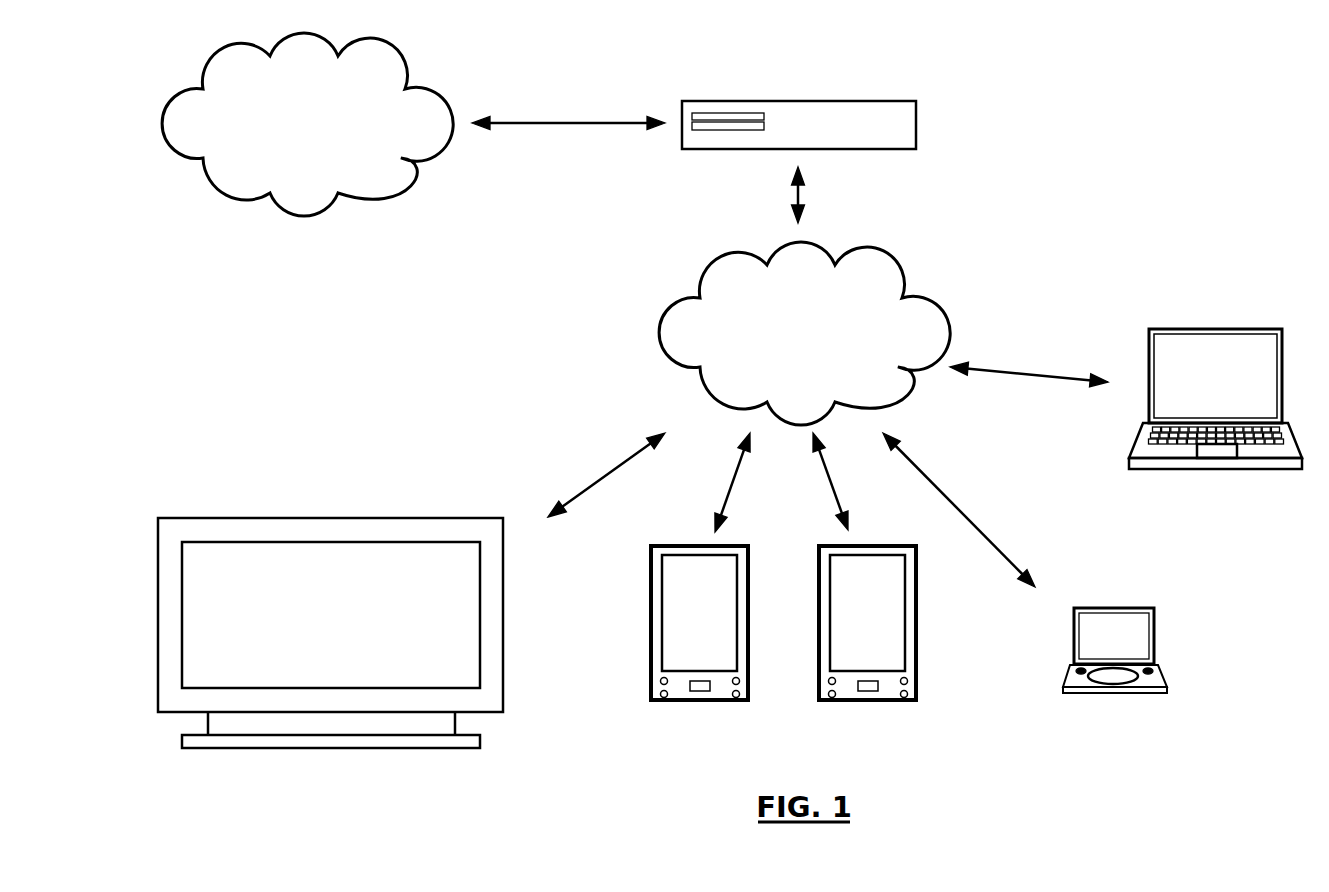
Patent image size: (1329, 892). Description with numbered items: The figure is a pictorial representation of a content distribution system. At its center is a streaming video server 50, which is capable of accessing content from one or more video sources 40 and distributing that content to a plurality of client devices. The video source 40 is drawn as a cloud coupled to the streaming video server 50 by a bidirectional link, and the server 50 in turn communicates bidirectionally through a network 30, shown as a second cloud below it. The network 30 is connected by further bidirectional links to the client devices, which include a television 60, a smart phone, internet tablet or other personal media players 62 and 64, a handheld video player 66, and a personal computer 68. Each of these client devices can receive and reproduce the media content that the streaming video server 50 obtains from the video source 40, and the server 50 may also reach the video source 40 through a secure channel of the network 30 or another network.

The network 30 is at (804, 333).
The video source 40 is at (307, 124).
The streaming video server 50 is at (845, 127).
The television 60 is at (198, 576).
The personal media player 62 is at (670, 586).
The personal media player 64 is at (867, 623).
The handheld video player 66 is at (1085, 642).
The personal computer 68 is at (1174, 401).